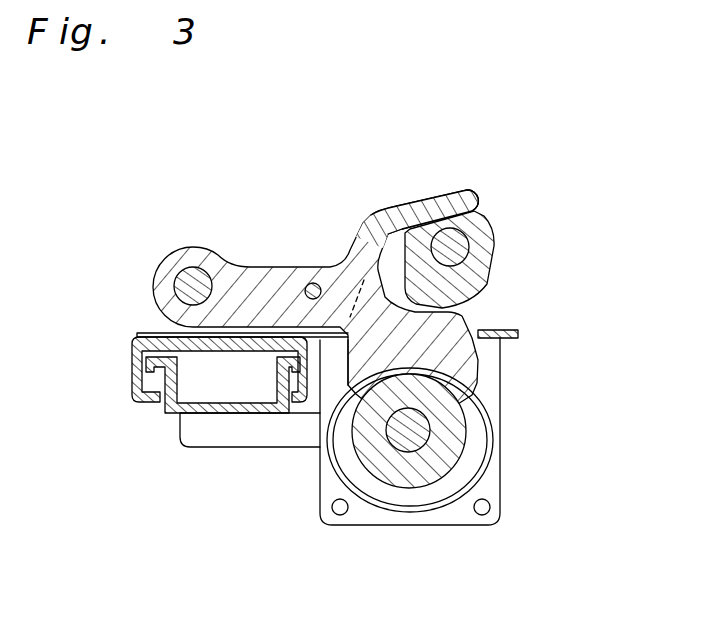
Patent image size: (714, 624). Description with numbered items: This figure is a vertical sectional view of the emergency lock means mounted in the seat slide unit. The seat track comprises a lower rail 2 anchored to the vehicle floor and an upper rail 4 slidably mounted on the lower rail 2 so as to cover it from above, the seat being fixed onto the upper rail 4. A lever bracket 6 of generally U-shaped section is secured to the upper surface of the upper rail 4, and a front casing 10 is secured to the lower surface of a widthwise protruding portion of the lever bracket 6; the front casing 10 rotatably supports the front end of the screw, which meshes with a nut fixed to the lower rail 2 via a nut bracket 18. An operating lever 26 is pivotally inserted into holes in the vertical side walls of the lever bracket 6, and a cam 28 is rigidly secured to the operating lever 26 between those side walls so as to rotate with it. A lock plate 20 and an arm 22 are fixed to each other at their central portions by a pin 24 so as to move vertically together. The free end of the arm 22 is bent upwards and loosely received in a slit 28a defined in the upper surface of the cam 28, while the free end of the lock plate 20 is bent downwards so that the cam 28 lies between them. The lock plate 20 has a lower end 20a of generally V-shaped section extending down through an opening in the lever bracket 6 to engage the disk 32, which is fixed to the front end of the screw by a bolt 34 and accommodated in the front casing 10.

The lower rail 2 is at (168, 409).
The upper rail 4 is at (130, 397).
The lever bracket 6 is at (503, 331).
The front casing 10 is at (487, 374).
The nut bracket 18 is at (257, 436).
The lock plate 20 is at (249, 278).
The lower end (engagement portion) 20a is at (490, 410).
The arm 22 is at (400, 212).
The pin 24 is at (312, 282).
The operating lever 26 is at (462, 244).
The cam 28 is at (474, 282).
The slit 28a is at (483, 213).
The disk 32 is at (448, 447).
The bolt 34 is at (405, 440).